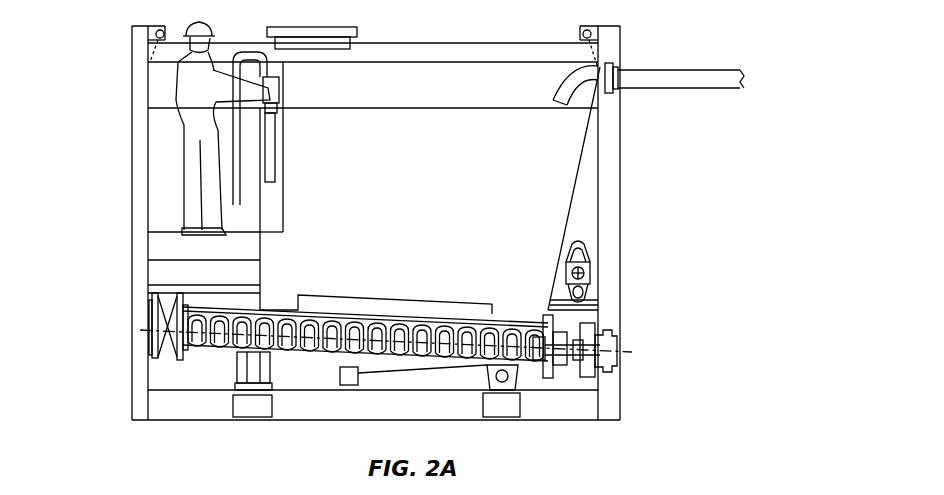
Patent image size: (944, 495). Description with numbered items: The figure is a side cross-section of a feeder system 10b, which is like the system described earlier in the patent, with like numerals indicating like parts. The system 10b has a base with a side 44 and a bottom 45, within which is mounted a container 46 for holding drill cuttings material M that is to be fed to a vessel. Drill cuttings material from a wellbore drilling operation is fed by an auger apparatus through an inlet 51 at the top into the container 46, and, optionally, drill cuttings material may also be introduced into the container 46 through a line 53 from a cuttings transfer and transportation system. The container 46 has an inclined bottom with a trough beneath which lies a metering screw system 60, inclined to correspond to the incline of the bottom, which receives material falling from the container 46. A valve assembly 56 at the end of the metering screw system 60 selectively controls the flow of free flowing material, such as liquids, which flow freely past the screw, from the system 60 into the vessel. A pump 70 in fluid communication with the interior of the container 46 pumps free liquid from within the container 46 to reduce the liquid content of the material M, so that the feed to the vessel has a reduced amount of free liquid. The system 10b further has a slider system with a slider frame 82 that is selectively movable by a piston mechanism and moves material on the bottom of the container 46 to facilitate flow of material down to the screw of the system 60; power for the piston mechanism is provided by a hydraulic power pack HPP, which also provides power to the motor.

The system 10b is at (93, 273).
The side 44 is at (130, 117).
The bottom 45 is at (610, 413).
The inlet 51 is at (350, 24).
The line 53 is at (685, 68).
The container 46 is at (583, 166).
The pump 70 is at (600, 268).
The slider frame 82 is at (335, 295).
The valve assembly 56 is at (155, 345).
The metering screw system 60 is at (333, 353).
The hydraulic power pack HPP is at (348, 386).
The material M is at (428, 212).